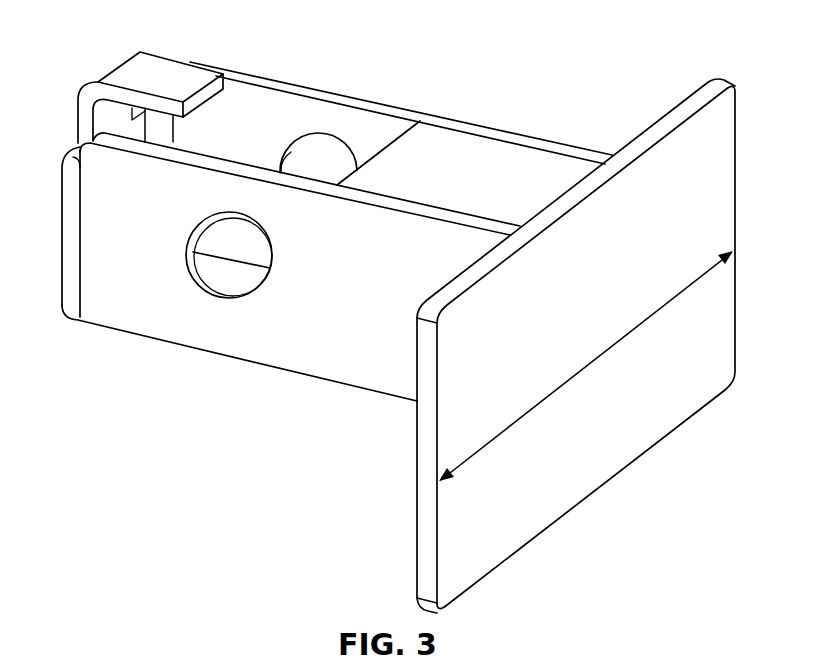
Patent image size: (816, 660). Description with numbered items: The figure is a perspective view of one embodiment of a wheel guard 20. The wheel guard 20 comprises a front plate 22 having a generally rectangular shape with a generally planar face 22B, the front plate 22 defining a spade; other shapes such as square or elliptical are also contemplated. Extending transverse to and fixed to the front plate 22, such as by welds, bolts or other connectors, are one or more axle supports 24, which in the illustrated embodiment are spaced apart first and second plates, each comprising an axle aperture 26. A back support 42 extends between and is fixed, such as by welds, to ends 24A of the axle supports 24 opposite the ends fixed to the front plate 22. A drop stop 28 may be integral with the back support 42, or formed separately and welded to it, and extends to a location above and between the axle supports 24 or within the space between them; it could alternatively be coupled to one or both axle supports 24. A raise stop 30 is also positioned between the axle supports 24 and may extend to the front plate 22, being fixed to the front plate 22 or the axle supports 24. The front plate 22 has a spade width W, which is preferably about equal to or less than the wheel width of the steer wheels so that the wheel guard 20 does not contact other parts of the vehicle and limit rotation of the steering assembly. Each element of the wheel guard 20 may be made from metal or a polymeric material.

The wheel guard 20 is at (543, 53).
The front plate 22 is at (610, 482).
The planar face 22B is at (650, 413).
The axle support 24 is at (343, 90).
The end of axle support 24A is at (173, 137).
The axle aperture 26 is at (356, 170).
The drop stop 28 is at (164, 72).
The raise stop 30 is at (503, 173).
The back support 42 is at (69, 243).
The spade width W is at (612, 350).